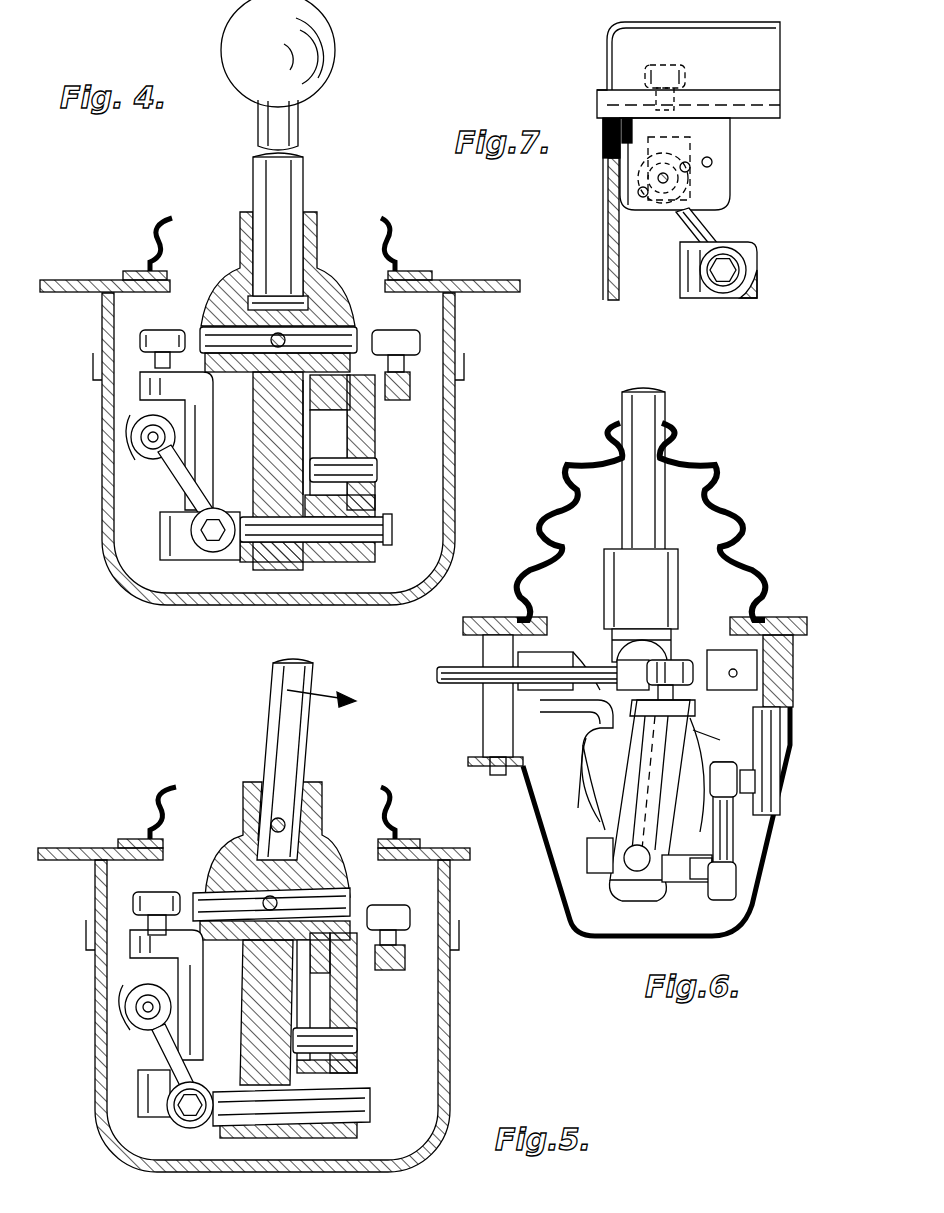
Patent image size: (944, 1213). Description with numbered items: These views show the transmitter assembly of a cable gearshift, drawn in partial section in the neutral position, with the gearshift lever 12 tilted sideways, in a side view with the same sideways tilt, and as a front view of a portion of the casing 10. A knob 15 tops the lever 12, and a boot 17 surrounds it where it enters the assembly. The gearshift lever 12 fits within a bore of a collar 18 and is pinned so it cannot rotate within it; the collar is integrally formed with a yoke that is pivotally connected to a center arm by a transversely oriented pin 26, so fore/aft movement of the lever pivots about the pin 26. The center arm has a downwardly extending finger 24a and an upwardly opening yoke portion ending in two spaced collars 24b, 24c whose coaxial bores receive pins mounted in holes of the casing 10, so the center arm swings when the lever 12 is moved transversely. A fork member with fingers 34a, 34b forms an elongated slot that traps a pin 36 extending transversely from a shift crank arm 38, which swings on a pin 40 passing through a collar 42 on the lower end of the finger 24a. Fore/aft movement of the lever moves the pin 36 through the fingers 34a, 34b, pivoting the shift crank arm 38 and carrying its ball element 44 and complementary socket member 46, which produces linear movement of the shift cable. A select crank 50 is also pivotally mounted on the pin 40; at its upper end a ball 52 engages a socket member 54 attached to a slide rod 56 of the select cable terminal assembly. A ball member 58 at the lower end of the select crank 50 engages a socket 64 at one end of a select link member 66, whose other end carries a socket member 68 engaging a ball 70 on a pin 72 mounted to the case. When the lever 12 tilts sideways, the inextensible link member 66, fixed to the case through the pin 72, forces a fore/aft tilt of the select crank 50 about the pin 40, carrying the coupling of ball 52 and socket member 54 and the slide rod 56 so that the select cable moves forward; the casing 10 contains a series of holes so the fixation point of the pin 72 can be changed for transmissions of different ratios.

In FIG. 4, the casing 10 is at (455, 312).
In FIG. 7, the casing 10 is at (732, 162).
In FIG. 6, the casing 10 is at (790, 725).
In FIG. 5, the casing 10 is at (127, 1032).
In FIG. 4, the gearshift lever 12 is at (294, 178).
In FIG. 6, the gearshift lever 12 is at (667, 405).
In FIG. 5, the gearshift lever 12 is at (303, 728).
In FIG. 4, the knob 15 is at (319, 42).
In FIG. 4, the boot 17 is at (399, 258).
In FIG. 6, the boot 17 is at (724, 470).
In FIG. 5, the boot 17 is at (407, 806).
In FIG. 4, the collar 18 is at (317, 241).
In FIG. 6, the collar 18 is at (680, 573).
In FIG. 5, the collar 18 is at (322, 811).
In FIG. 4, the finger 24a is at (270, 480).
In FIG. 5, the finger 24a is at (253, 1042).
In FIG. 6, the collar 24b is at (770, 626).
In FIG. 6, the collar 24c is at (547, 653).
In FIG. 4, the pin 26 is at (226, 300).
In FIG. 5, the pin 26 is at (350, 905).
In FIG. 6, the finger 34a is at (690, 742).
In FIG. 4, the finger 34b is at (330, 443).
In FIG. 6, the finger 34b is at (590, 766).
In FIG. 5, the finger 34b is at (318, 1018).
In FIG. 4, the pin 36 is at (378, 471).
In FIG. 5, the pin 36 is at (358, 1043).
In FIG. 5, the shift crank arm 38 is at (340, 1005).
In FIG. 4, the pin 40 is at (372, 525).
In FIG. 6, the pin 40 is at (652, 890).
In FIG. 5, the pin 40 is at (361, 1109).
In FIG. 4, the collar 42 is at (268, 563).
In FIG. 5, the collar 42 is at (255, 1133).
In FIG. 4, the ball element 44 is at (425, 343).
In FIG. 5, the ball element 44 is at (412, 912).
In FIG. 4, the socket member 46 is at (387, 330).
In FIG. 5, the socket member 46 is at (410, 956).
In FIG. 4, the select crank 50 is at (200, 433).
In FIG. 7, the select crank 50 is at (713, 140).
In FIG. 6, the select crank 50 is at (643, 814).
In FIG. 5, the select crank 50 is at (199, 962).
In FIG. 4, the ball 52 is at (173, 330).
In FIG. 7, the ball 52 is at (668, 70).
In FIG. 6, the ball 52 is at (677, 660).
In FIG. 5, the ball 52 is at (165, 897).
In FIG. 4, the socket member 54 is at (140, 340).
In FIG. 7, the socket member 54 is at (700, 78).
In FIG. 6, the socket member 54 is at (693, 661).
In FIG. 5, the socket member 54 is at (133, 903).
In FIG. 6, the slide rod 56 is at (450, 686).
In FIG. 7, the ball member 58 is at (721, 285).
In FIG. 6, the ball member 58 is at (736, 884).
In FIG. 5, the ball member 58 is at (163, 1117).
In FIG. 4, the socket 64 is at (208, 553).
In FIG. 7, the socket 64 is at (748, 257).
In FIG. 6, the socket 64 is at (734, 905).
In FIG. 5, the socket 64 is at (195, 1129).
In FIG. 4, the select link member 66 is at (170, 487).
In FIG. 7, the select link member 66 is at (722, 232).
In FIG. 6, the select link member 66 is at (727, 829).
In FIG. 5, the select link member 66 is at (152, 1055).
In FIG. 4, the socket member 68 is at (170, 420).
In FIG. 7, the socket member 68 is at (643, 170).
In FIG. 6, the socket member 68 is at (715, 783).
In FIG. 5, the socket member 68 is at (165, 1000).
In FIG. 6, the ball 70 is at (750, 778).
In FIG. 5, the ball 70 is at (165, 1008).
In FIG. 7, the pin 72 is at (670, 183).
In FIG. 6, the pin 72 is at (788, 812).
In FIG. 5, the pin 72 is at (146, 1007).